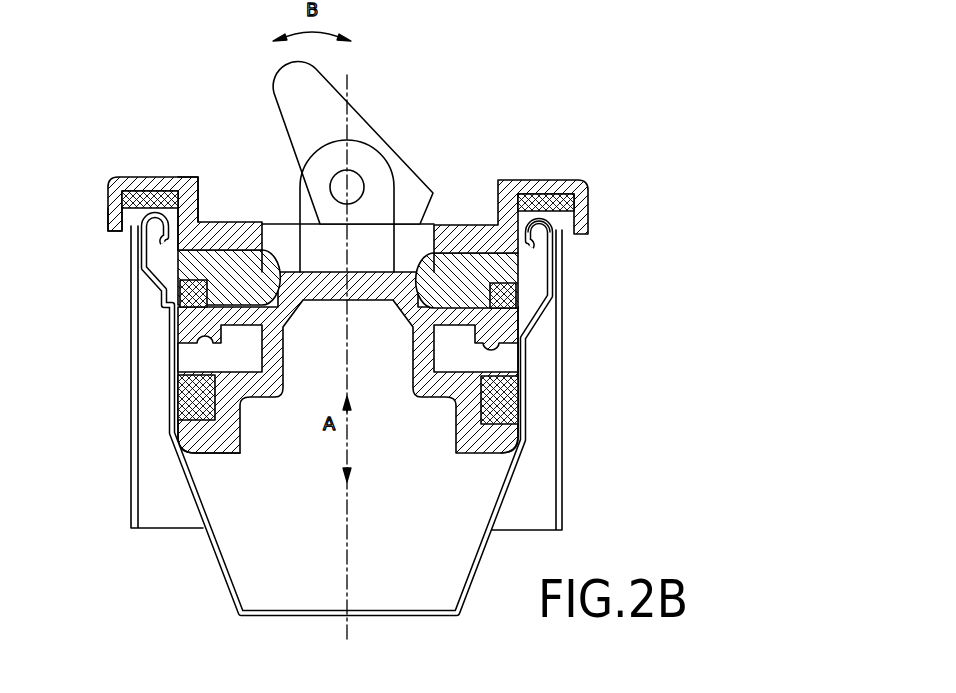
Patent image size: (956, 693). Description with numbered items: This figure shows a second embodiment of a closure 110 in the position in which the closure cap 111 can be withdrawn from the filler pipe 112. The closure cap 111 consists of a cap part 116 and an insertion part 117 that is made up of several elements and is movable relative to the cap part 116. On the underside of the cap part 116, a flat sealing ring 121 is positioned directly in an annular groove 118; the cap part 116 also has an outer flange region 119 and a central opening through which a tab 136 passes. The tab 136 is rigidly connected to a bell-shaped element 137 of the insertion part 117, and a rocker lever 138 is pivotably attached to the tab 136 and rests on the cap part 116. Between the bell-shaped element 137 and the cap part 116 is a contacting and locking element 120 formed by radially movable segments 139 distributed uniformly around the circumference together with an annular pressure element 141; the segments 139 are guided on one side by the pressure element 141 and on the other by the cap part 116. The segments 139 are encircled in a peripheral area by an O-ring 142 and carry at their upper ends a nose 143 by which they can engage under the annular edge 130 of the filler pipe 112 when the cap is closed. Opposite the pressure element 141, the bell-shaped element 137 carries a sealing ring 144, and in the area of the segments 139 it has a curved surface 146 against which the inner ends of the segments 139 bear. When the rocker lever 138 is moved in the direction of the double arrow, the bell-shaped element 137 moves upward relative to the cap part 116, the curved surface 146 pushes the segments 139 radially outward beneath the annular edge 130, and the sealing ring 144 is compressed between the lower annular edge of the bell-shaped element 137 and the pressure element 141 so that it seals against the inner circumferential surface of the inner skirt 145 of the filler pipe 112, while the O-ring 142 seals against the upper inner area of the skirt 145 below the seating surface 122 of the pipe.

The closure 110 is at (662, 180).
The closure cap 111 is at (372, 185).
The filler pipe 112 is at (570, 510).
The cap part 116 is at (131, 177).
The insertion part 117 is at (218, 459).
The annular groove 118 is at (167, 177).
The cap flange 119 is at (109, 212).
The contacting and locking element 120 is at (481, 248).
The flat sealing ring 121 is at (150, 191).
The seating surface 122 is at (141, 226).
The annular edge 130 is at (530, 248).
The tab 136 is at (355, 182).
The bell-shaped element 137 is at (414, 446).
The rocker lever 138 is at (318, 92).
The segments 139 is at (217, 270).
The annular pressure element 141 is at (502, 333).
The O-ring 142 is at (516, 303).
The nose 143 is at (513, 268).
The sealing ring 144 is at (505, 403).
The inner skirt 145 is at (247, 577).
The curved surface 146 is at (180, 342).